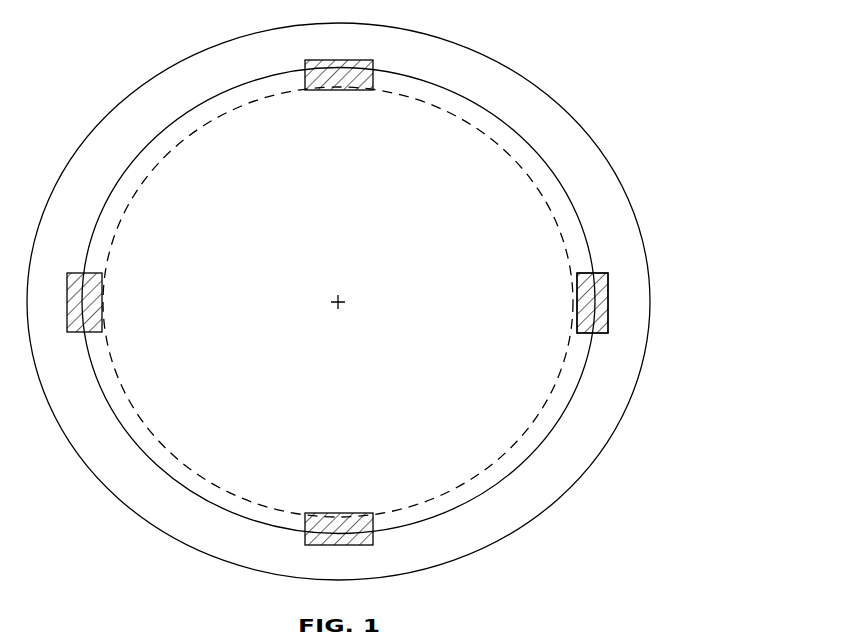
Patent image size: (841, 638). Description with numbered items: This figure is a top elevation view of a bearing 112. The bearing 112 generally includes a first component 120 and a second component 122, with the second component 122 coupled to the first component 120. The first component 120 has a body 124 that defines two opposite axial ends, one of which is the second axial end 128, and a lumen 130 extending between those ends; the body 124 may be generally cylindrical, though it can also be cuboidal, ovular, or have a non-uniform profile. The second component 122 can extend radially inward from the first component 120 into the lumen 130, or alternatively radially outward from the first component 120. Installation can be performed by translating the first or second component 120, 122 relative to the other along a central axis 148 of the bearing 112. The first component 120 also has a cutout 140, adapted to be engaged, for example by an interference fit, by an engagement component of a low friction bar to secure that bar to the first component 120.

The bearing 112 is at (580, 79).
The first component 120 is at (588, 470).
The second component 122 is at (341, 91).
The body 124 is at (450, 543).
The second axial end 128 is at (106, 160).
The lumen 130 is at (356, 272).
The cutout 140 is at (609, 318).
The central axis 148 is at (343, 307).